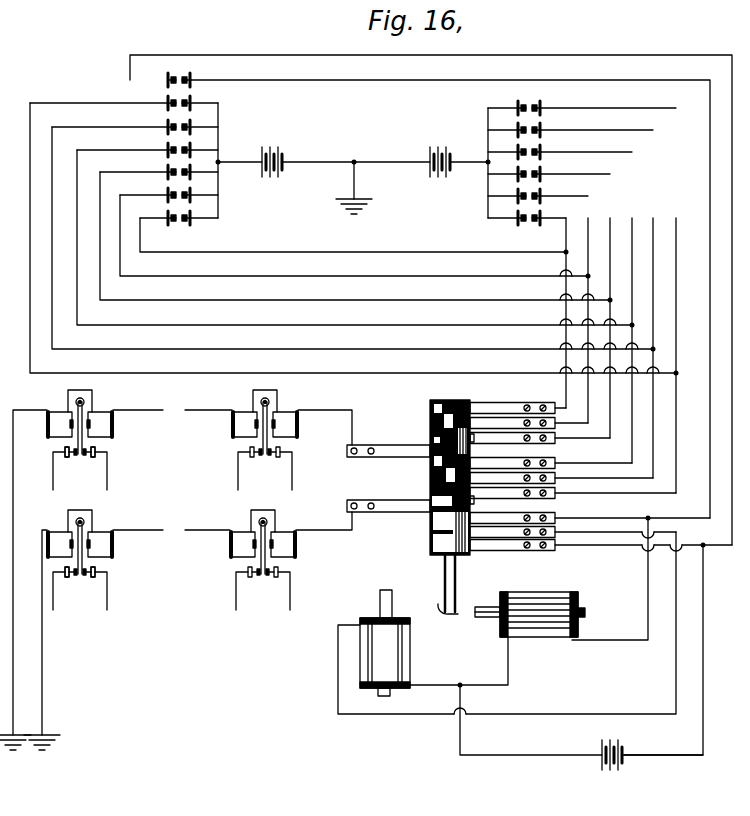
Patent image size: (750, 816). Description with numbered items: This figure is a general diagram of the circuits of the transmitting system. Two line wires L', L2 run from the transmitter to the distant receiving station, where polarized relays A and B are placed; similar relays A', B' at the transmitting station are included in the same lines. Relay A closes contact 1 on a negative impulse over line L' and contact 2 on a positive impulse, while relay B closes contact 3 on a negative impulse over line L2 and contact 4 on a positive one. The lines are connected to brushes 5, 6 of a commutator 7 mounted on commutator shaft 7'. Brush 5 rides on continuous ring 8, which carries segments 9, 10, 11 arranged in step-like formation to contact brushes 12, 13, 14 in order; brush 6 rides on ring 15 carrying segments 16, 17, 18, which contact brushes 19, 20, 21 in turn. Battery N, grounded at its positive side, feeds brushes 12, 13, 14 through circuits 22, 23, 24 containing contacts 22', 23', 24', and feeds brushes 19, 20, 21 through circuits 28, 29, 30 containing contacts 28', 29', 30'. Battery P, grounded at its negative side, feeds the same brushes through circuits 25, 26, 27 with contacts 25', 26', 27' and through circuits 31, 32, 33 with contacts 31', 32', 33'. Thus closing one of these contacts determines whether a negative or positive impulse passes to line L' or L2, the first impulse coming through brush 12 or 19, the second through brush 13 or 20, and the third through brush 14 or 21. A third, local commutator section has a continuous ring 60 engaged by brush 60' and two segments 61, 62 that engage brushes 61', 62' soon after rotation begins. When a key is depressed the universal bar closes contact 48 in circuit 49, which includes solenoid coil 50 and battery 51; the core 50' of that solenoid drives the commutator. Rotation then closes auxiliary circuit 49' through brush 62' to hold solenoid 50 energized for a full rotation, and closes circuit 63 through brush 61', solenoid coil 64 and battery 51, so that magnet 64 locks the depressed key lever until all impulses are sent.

The contact 48 is at (181, 73).
The circuit 49 is at (433, 368).
The auxiliary circuit 49' is at (621, 549).
The contact 30' is at (124, 99).
The contact 29' is at (135, 122).
The contact 28' is at (147, 145).
The contact 24' is at (159, 167).
The contact 23' is at (169, 190).
The contact 22' is at (179, 228).
The contact 33' is at (582, 102).
The contact 32' is at (570, 125).
The contact 31' is at (560, 147).
The contact 27' is at (549, 169).
The contact 26' is at (538, 191).
The contact 25' is at (528, 213).
The circuit 22 is at (354, 237).
The circuit 23 is at (355, 237).
The circuit 24 is at (356, 238).
The circuit 28 is at (356, 239).
The circuit 29 is at (354, 239).
The circuit 30 is at (354, 240).
The circuit 25 is at (553, 313).
The circuit 26 is at (599, 320).
The circuit 27 is at (620, 328).
The circuit 31 is at (642, 321).
The circuit 32 is at (664, 313).
The circuit 33 is at (690, 331).
The battery N is at (286, 160).
The battery P is at (422, 163).
The polarized relay A is at (61, 566).
The polarized relay A' is at (266, 436).
The polarized relay B is at (73, 625).
The polarized relay B' is at (265, 555).
The line wire L' is at (172, 399).
The line wire L2 is at (171, 519).
The contact 1 is at (67, 458).
The contact 2 is at (92, 458).
The contact 3 is at (67, 578).
The contact 4 is at (92, 578).
The brush 5 is at (375, 448).
The brush 6 is at (372, 504).
The commutator 7 is at (450, 469).
The commutator shaft 7' is at (459, 584).
The continuous ring 8 is at (432, 441).
The segment 9 is at (433, 405).
The segment 10 is at (436, 420).
The segment 11 is at (474, 440).
The brush 12 is at (496, 404).
The brush 13 is at (505, 420).
The brush 14 is at (525, 440).
The continuous ring 15 is at (435, 503).
The segment 16 is at (430, 468).
The segment 17 is at (432, 484).
The segment 18 is at (474, 498).
The brush 19 is at (565, 461).
The brush 20 is at (568, 478).
The brush 21 is at (562, 494).
The continuous ring 60 is at (432, 563).
The segment 61 is at (414, 551).
The segment 62 is at (415, 530).
The brush 60' is at (601, 648).
The brush 61' is at (573, 553).
The brush 62' is at (590, 511).
The circuit 63 is at (392, 722).
The solenoid coil 64 is at (404, 655).
The solenoid coil 50 is at (542, 629).
The core 50' is at (485, 623).
The battery 51 is at (626, 750).